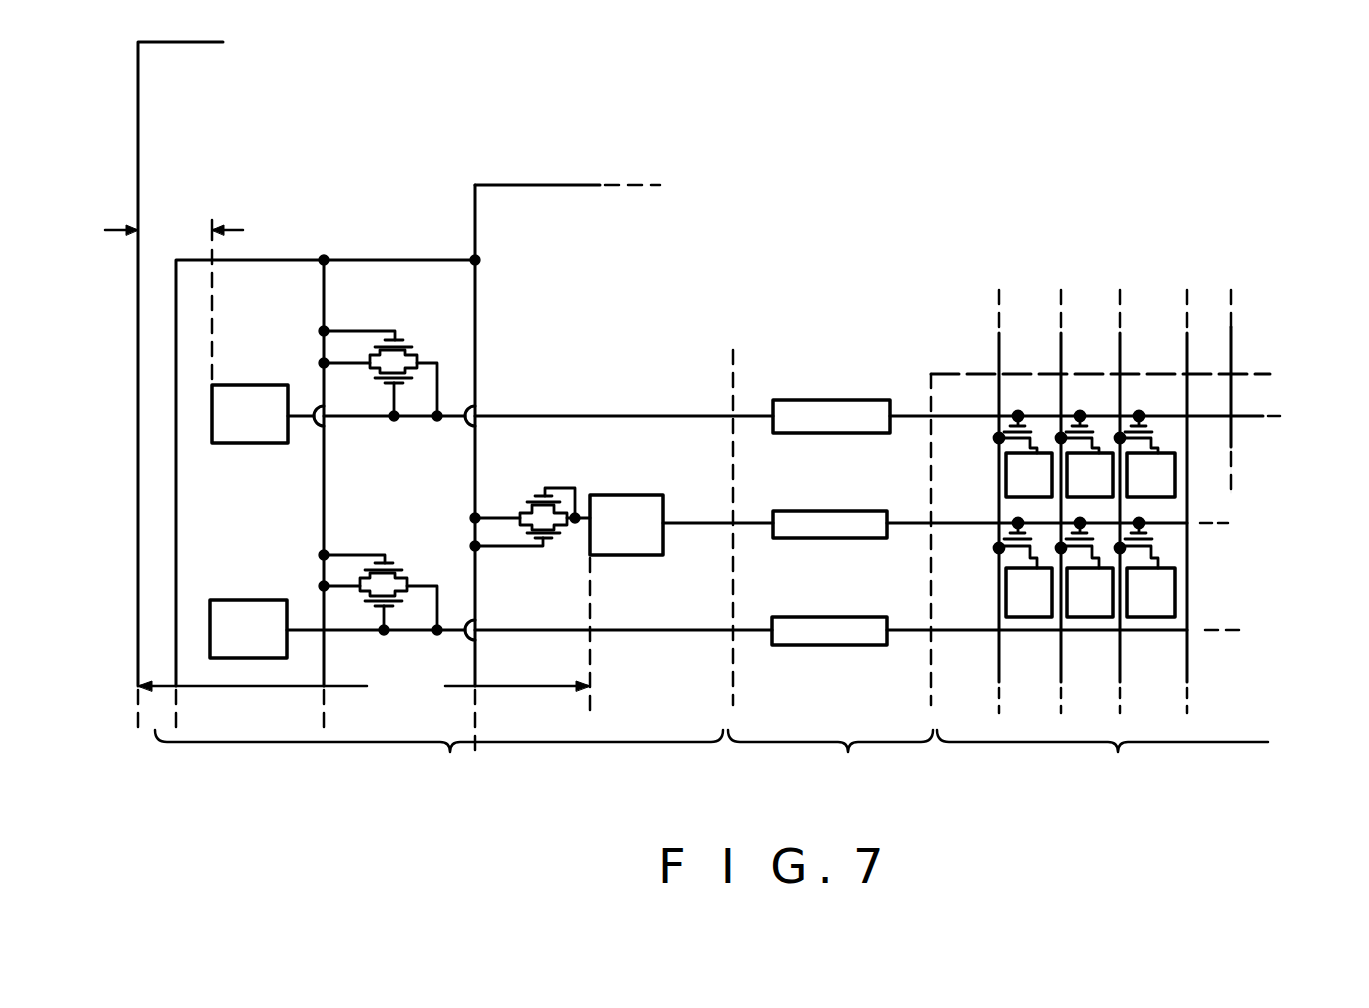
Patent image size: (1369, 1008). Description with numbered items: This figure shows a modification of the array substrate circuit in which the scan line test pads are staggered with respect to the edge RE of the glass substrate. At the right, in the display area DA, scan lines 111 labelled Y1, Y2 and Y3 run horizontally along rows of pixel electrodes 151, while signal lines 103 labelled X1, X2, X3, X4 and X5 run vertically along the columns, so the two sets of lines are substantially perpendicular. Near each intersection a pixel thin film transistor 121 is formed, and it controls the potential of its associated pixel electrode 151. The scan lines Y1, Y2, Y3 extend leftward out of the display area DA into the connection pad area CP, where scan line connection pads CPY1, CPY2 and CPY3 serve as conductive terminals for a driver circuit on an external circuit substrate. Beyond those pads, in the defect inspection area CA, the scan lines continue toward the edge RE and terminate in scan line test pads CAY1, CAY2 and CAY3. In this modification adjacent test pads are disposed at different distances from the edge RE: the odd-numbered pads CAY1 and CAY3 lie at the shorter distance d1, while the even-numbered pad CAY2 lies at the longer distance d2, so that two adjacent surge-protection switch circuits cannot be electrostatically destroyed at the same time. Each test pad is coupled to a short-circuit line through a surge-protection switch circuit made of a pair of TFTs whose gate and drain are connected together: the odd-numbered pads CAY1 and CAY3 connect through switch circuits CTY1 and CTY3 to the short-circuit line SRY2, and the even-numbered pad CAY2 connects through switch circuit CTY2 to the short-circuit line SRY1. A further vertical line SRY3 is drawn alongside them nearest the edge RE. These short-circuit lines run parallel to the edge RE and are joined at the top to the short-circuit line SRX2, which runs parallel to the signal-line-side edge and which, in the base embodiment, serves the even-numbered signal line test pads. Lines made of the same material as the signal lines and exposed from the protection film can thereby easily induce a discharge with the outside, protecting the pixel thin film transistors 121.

The edge of the glass substrate RE is at (138, 573).
The distance d1 is at (174, 298).
The distance d2 is at (364, 635).
The short-circuit line SRY1 is at (478, 288).
The short-circuit line SRY2 is at (324, 288).
The Y-direction scanning signal line 3 SRY3 is at (176, 506).
The short-circuit line SRX2 is at (572, 185).
The surge-protection switch circuit CTY1 is at (400, 340).
The surge-protection switch circuit CTY2 is at (542, 482).
The surge-protection switch circuit CTY3 is at (386, 555).
The scan line test pad CAY1 is at (250, 384).
The scan line test pad CAY2 is at (648, 504).
The scan line test pad CAY3 is at (241, 600).
The scan line connection pad CPY1 is at (795, 408).
The scan line connection pad CPY2 is at (799, 518).
The scan line connection pad CPY3 is at (799, 625).
The scan line Y1 is at (785, 402).
The scan line Y2 is at (945, 504).
The scan line Y3 is at (767, 615).
The signal line X1 is at (1024, 501).
The signal line X2 is at (1085, 501).
The signal line X3 is at (1143, 501).
The signal line X4 is at (1209, 501).
The signal line X5 is at (1252, 391).
The scan line 111 is at (1286, 409).
The signal line 103 is at (1234, 458).
The pixel thin film transistor 121 is at (1178, 543).
The pixel electrode 151 is at (1170, 600).
The defect inspection area CA is at (439, 758).
The connection pad area CP is at (830, 758).
The display area DA is at (1102, 758).